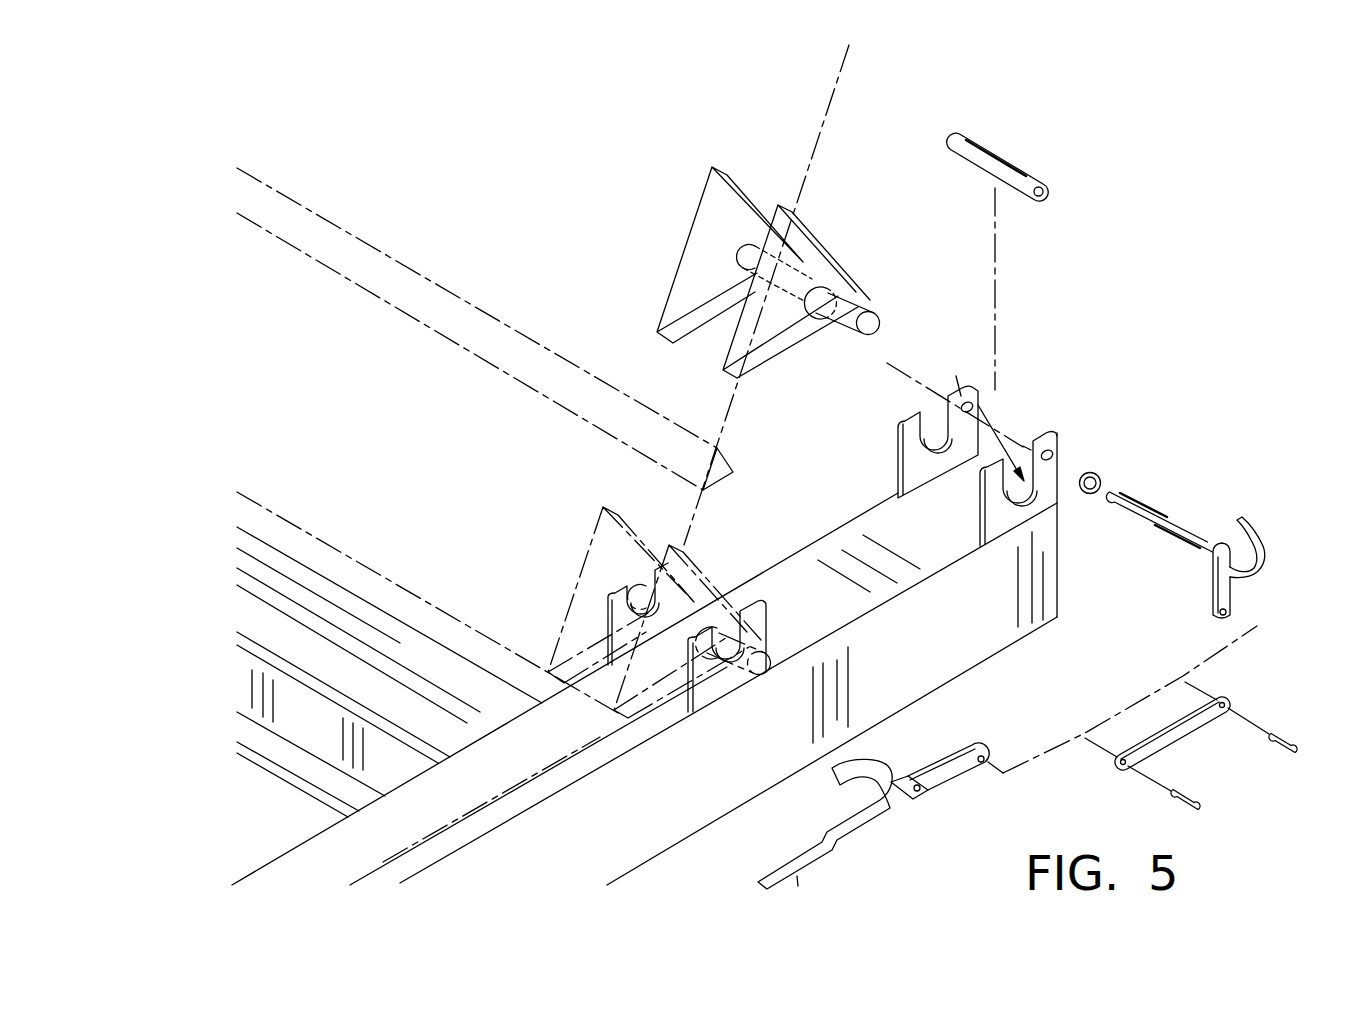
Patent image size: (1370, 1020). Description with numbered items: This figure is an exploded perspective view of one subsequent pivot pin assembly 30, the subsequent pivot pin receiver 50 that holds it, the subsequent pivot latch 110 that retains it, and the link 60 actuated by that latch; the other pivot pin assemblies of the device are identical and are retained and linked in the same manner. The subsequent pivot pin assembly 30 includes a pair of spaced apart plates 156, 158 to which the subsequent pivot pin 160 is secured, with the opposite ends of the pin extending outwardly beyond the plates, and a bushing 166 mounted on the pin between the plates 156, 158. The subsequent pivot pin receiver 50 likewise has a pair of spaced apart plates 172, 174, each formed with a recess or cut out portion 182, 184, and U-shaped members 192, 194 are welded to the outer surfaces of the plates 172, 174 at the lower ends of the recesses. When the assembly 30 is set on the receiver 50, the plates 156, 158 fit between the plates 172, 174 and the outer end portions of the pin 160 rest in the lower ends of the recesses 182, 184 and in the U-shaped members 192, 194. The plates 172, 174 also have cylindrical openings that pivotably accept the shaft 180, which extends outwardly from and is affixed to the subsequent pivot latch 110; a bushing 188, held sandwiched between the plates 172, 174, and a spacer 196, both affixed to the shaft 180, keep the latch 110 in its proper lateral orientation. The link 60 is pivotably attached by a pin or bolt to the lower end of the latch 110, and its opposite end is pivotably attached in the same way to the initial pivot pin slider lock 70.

The subsequent pivot pin assembly 30 is at (818, 272).
The plate 156 is at (730, 300).
The plate 158 is at (795, 342).
The bushing 166 is at (807, 250).
The subsequent pivot pin 160 is at (950, 368).
The subsequent pivot pin receiver 50 is at (995, 410).
The plate 172 is at (911, 439).
The plate 174 is at (1063, 500).
The U-shaped member 192 is at (942, 437).
The U-shaped member 194 is at (1027, 497).
The bushing 188 is at (997, 153).
The recess 182 is at (956, 380).
The recess 184 is at (1027, 450).
The spacer 196 is at (1098, 470).
The shaft 180 is at (1167, 520).
The subsequent pivot latch 110 is at (1250, 522).
The link 60 is at (1177, 743).
The initial pivot pin slider lock 70 is at (890, 813).